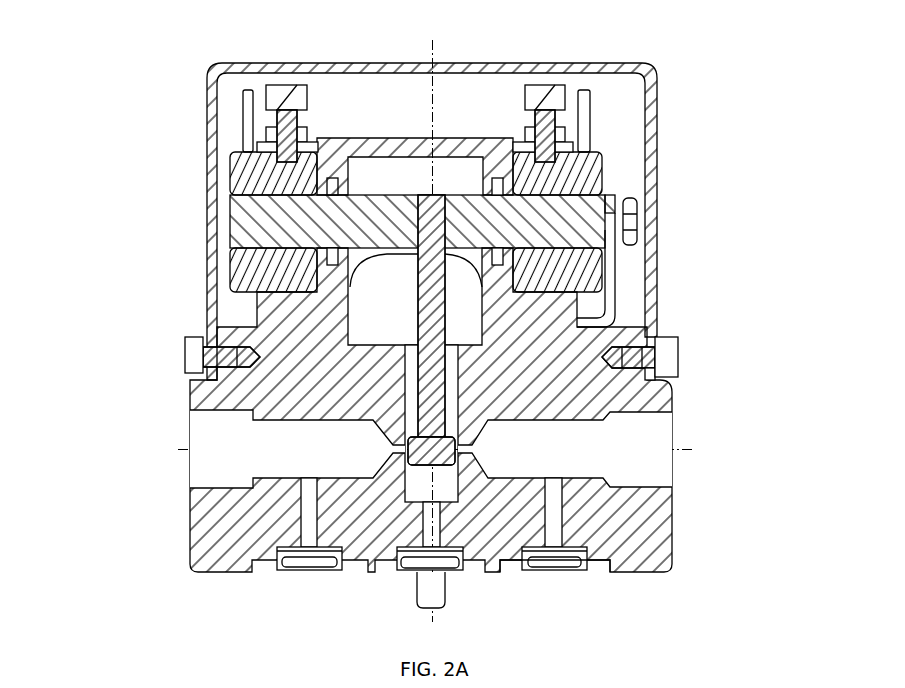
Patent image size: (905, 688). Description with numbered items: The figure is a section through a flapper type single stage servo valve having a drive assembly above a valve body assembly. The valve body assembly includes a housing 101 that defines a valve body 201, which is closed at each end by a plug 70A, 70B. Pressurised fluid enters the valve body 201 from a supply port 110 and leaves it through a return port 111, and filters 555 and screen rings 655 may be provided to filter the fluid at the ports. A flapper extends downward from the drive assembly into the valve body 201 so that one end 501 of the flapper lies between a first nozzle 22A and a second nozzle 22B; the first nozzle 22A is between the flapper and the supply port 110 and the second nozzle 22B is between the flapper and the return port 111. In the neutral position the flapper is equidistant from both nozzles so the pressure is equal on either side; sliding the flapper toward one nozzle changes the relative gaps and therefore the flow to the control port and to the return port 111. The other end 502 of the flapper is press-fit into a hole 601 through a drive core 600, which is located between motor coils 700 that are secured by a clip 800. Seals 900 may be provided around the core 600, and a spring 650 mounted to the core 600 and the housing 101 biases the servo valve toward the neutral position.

The clip 800 is at (320, 140).
The motor coils 700 is at (258, 170).
The other end of the flapper 502 is at (425, 203).
The hole 601 is at (446, 230).
The drive core 600 is at (240, 220).
The spring 650 is at (610, 260).
The seals 900 is at (242, 282).
The one end of the flapper 501 is at (444, 431).
The housing 101 is at (185, 398).
The plug 70A is at (215, 442).
The plug 70B is at (643, 440).
The valve body 201 is at (340, 422).
The first nozzle 22A is at (277, 556).
The supply port 110 is at (308, 570).
The filters 555 is at (406, 554).
The screen rings 655 is at (463, 573).
The second nozzle 22B is at (550, 556).
The return port 111 is at (625, 552).